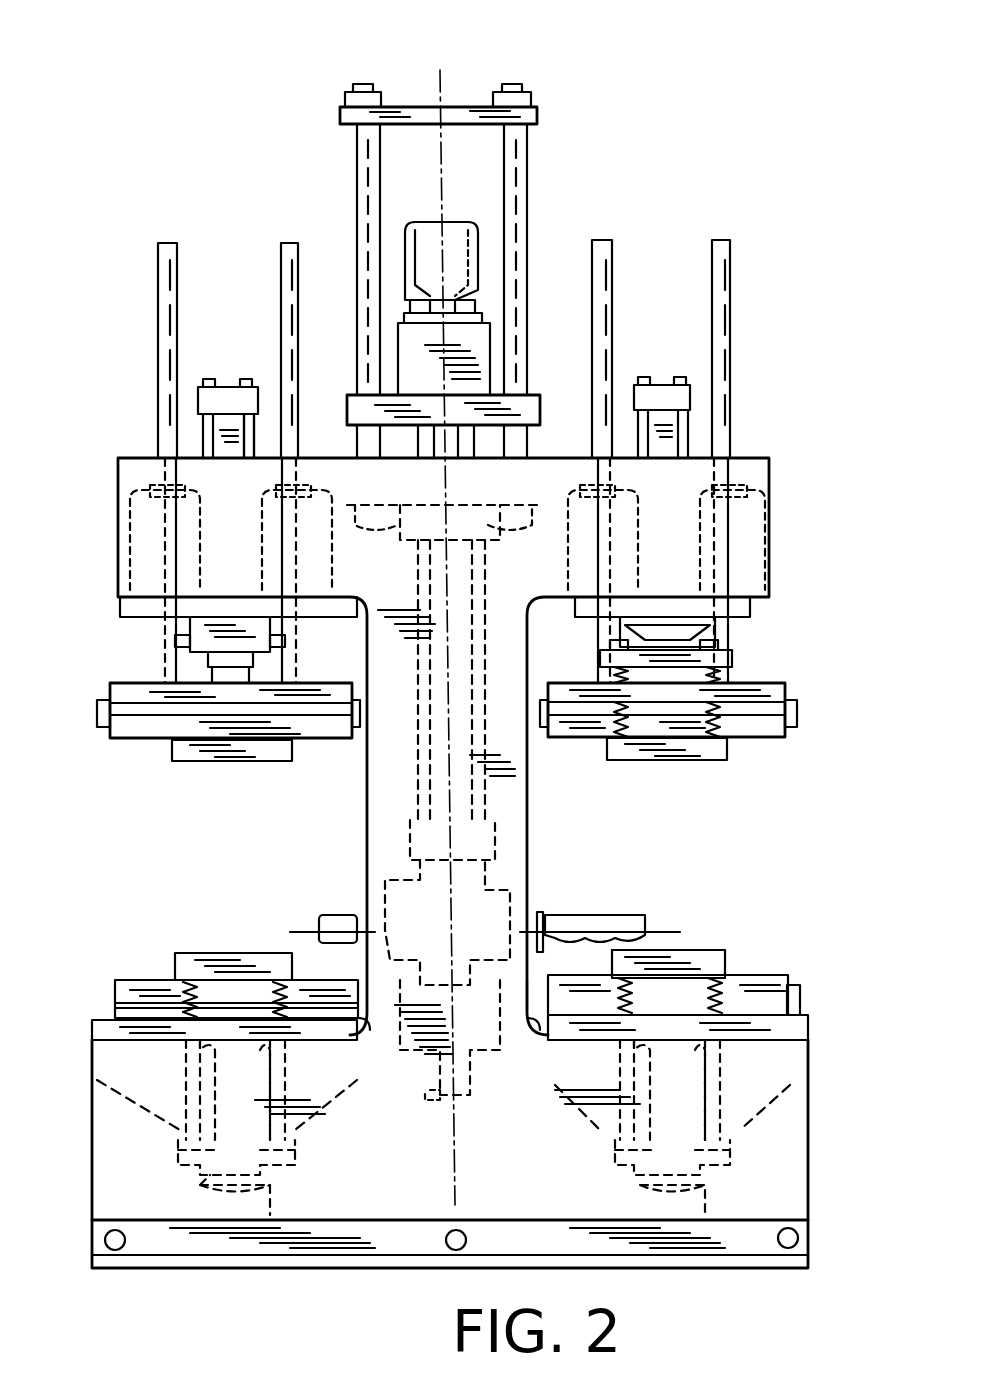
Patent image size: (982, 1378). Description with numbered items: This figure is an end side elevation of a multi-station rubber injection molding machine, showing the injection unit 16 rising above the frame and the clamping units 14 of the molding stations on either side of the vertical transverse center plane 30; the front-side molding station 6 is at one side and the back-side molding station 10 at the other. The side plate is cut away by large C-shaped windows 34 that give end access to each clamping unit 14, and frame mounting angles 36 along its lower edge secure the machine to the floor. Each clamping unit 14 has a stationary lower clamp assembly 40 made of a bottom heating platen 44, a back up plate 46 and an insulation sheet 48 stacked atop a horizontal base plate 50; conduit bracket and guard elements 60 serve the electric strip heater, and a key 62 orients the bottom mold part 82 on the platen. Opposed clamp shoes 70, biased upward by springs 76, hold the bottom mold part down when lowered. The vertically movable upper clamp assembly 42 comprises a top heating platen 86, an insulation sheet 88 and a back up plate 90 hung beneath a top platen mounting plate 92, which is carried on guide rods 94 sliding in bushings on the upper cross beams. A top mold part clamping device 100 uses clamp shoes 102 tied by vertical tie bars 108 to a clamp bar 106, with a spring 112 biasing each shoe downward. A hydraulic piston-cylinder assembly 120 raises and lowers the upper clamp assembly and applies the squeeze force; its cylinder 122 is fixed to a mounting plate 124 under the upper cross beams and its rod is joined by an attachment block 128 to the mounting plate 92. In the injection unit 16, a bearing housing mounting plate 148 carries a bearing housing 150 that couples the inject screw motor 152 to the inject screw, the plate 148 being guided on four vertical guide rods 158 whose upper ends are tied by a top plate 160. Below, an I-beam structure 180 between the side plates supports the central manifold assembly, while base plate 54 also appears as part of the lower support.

The molding station 6 is at (706, 705).
The molding station 10 is at (198, 684).
The clamping unit 14 is at (442, 970).
The injection unit 16 is at (448, 248).
The vertical transverse center plane 30 is at (460, 1150).
The window 34 is at (367, 780).
The frame mounting angle 36 is at (446, 1141).
The lower clamp assembly 40 is at (245, 954).
The upper clamp assembly 42 is at (262, 738).
The bottom heating platen 44 is at (150, 980).
The back up plate 46 is at (136, 985).
The insulation sheet 48 is at (92, 1032).
The base plate 50 is at (372, 1025).
The base bar 54 is at (810, 1025).
The conduit bracket and guard element 60 is at (527, 995).
The key 62 is at (348, 945).
The clamp shoe 70 is at (678, 950).
The spring 76 is at (722, 1010).
The bottom mold part 82 is at (600, 915).
The top heating platen 86 is at (140, 740).
The insulation sheet 88 is at (206, 737).
The back up plate 90 is at (170, 740).
The top platen mounting plate 92 is at (330, 683).
The guide rod 94 is at (158, 272).
The top mold part clamping device 100 is at (694, 706).
The clamp shoe 102 is at (685, 762).
The clamp bar 106 is at (605, 658).
The tie bar 108 is at (720, 672).
The spring 112 is at (722, 722).
The hydraulic piston-cylinder assembly 120 is at (199, 421).
The cylinder 122 is at (258, 402).
The mounting plate 124 is at (122, 600).
The attachment block 128 is at (200, 675).
The bearing housing mounting plate 148 is at (540, 405).
The bearing housing 150 is at (490, 350).
The inject screw motor 152 is at (406, 225).
The vertical guide rod 158 is at (357, 185).
The top plate 160 is at (455, 107).
The I-beam structure 180 is at (433, 1094).